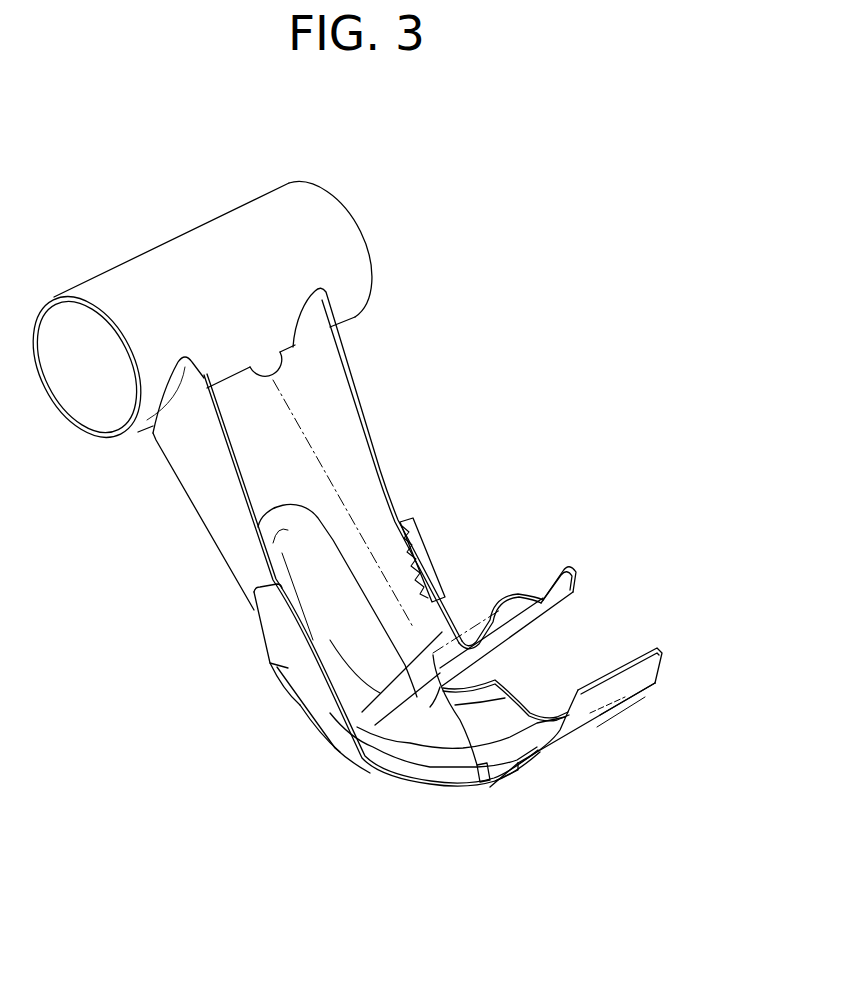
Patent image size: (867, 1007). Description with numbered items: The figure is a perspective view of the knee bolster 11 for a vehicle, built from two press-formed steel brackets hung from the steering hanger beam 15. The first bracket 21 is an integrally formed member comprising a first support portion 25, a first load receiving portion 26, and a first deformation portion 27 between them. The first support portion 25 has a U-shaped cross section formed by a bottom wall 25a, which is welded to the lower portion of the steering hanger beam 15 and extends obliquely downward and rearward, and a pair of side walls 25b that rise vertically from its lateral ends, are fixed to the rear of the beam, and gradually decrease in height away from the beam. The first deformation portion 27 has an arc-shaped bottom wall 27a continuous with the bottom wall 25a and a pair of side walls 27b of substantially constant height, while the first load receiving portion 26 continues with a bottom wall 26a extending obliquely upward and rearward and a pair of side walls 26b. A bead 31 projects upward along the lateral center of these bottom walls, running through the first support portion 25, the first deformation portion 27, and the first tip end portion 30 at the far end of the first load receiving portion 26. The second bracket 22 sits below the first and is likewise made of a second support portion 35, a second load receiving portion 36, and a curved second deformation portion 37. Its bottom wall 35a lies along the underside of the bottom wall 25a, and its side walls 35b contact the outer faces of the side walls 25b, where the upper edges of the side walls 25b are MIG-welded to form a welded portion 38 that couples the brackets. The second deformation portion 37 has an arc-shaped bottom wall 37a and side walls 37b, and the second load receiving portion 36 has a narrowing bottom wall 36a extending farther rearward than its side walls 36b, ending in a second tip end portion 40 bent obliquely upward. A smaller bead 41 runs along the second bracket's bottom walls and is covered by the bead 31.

The knee bolster 11 is at (565, 384).
The steering hanger beam 15 is at (195, 246).
The first bracket 21 is at (350, 349).
The second bracket 22 is at (323, 758).
The first support portion 25 is at (177, 460).
The bottom wall 25a is at (300, 458).
The side walls 25b is at (358, 390).
The first load receiving portion 26 is at (567, 567).
The bottom wall 26a is at (553, 610).
The side walls 26b is at (550, 573).
The first deformation portion 27 is at (340, 727).
The bottom wall 27a is at (357, 770).
The side walls 27b is at (340, 708).
The first tip end portion 30 is at (577, 587).
The bead 31 is at (503, 587).
The second support portion 35 is at (283, 667).
The bottom wall 35a is at (530, 660).
The side walls 35b is at (298, 682).
The second load receiving portion 36 is at (633, 703).
The bottom wall 36a is at (597, 730).
The side walls 36b is at (450, 787).
The second deformation portion 37 is at (393, 782).
The bottom wall 37a is at (565, 717).
The side walls 37b is at (550, 737).
The welded portion 38 is at (420, 530).
The second tip end portion 40 is at (653, 667).
The bead 41 is at (410, 737).